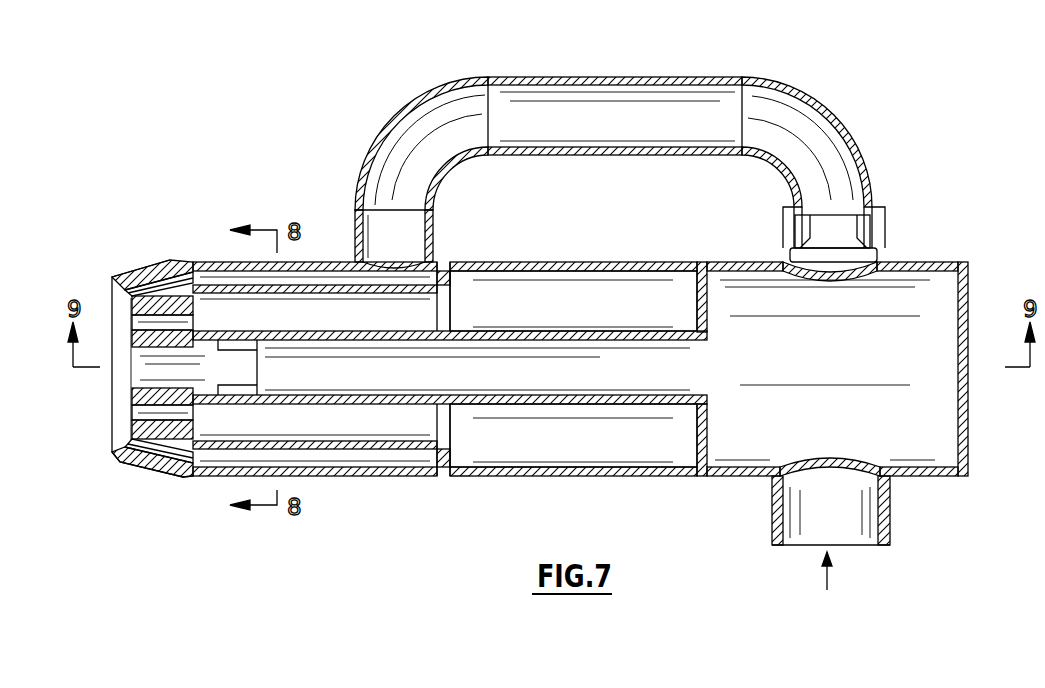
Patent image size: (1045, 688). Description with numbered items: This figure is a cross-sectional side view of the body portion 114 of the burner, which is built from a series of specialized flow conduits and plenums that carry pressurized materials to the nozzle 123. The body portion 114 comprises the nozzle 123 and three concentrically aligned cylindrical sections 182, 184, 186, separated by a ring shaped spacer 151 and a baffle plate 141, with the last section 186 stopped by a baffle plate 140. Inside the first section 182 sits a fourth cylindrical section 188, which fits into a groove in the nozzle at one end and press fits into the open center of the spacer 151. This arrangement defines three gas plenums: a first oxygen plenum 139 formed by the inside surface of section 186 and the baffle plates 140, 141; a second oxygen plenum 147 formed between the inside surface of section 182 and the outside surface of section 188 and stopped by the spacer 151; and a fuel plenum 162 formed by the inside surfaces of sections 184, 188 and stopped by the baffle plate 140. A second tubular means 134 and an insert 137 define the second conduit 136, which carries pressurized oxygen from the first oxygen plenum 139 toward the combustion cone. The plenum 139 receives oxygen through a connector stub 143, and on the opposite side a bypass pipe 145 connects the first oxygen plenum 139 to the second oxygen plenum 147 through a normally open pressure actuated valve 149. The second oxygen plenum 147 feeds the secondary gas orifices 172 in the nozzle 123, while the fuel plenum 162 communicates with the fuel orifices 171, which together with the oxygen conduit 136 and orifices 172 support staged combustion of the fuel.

The bypass pipe 145 is at (665, 92).
The second oxygen plenum 147 is at (322, 277).
The pressure actuated valve 149 is at (868, 232).
The first oxygen plenum 139 is at (913, 283).
The baffle plate 140 is at (968, 283).
The ring shaped spacer 151 is at (445, 260).
The second tubular means 134 is at (535, 330).
The insert 137 is at (212, 340).
The gas orifices 172 is at (166, 283).
The fuel orifices 171 is at (150, 320).
The second conduit 136 is at (138, 378).
The nozzle 123 is at (133, 486).
The fourth cylindrical section 188 is at (225, 450).
The first cylindrical section 182 is at (350, 478).
The body portion 114 is at (464, 488).
The fuel plenum 162 is at (570, 456).
The second cylindrical section 184 is at (626, 477).
The baffle plate 141 is at (693, 477).
The third cylindrical section 186 is at (930, 477).
The connector stub 143 is at (890, 527).